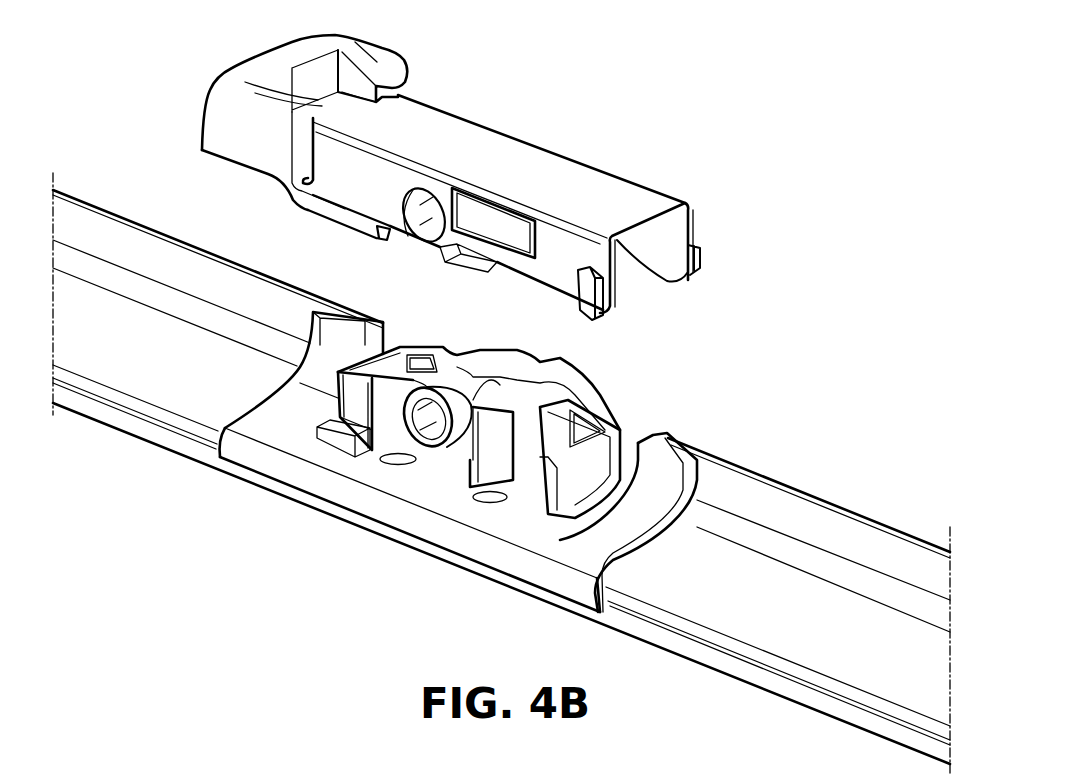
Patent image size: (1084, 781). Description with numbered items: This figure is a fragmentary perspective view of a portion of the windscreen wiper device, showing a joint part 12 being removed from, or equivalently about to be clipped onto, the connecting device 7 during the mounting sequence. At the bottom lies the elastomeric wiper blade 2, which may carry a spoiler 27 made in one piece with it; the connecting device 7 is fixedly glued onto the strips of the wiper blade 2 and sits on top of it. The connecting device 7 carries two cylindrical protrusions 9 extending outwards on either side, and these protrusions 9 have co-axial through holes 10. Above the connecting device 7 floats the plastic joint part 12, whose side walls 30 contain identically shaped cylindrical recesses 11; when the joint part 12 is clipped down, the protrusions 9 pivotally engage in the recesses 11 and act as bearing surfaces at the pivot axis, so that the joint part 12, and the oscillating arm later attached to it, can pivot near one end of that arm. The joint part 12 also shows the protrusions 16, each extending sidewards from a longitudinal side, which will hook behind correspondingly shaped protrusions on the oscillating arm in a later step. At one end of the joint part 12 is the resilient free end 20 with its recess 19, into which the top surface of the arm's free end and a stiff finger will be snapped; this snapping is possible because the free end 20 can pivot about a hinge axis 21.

The wiper blade 2 is at (765, 678).
The spoiler 27 is at (113, 242).
The connecting device 7 is at (705, 393).
The cylindrical protrusions 9 is at (533, 355).
The through holes 10 is at (417, 425).
The cylindrical recesses 11 is at (433, 212).
The joint part 12 is at (489, 172).
The protrusions 16 is at (600, 320).
The recess 19 is at (357, 70).
The free end 20 is at (268, 77).
The hinge axis 21 is at (316, 209).
The side walls 30 is at (372, 190).